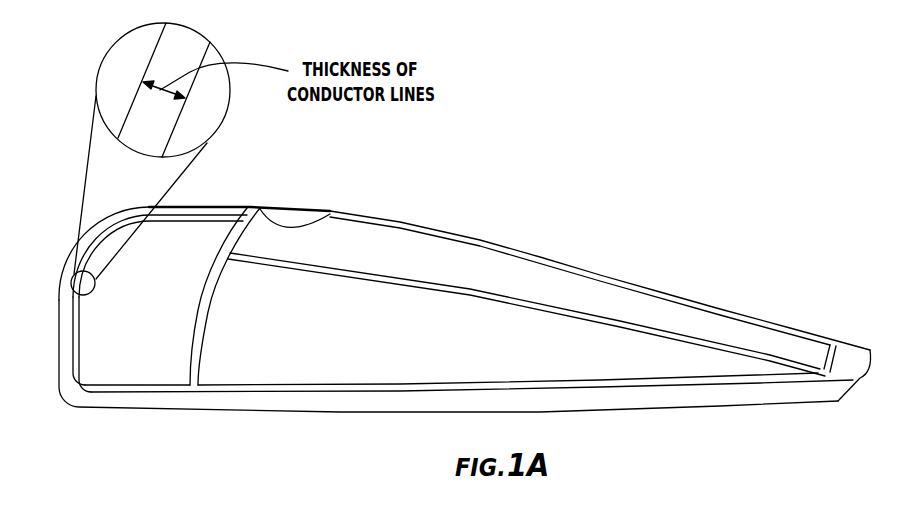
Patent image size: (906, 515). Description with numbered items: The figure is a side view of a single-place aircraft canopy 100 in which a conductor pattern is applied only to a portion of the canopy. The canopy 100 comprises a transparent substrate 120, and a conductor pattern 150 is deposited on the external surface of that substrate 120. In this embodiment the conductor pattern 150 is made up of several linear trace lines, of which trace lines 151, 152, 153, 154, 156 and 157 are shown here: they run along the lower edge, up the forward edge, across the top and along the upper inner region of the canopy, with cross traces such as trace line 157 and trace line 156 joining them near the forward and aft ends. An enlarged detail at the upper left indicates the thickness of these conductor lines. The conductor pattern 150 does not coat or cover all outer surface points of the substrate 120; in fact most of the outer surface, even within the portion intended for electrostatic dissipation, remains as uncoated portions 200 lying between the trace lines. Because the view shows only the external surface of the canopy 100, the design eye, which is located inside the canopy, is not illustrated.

The single-place canopy 100 is at (533, 193).
The transparent substrate 120 is at (353, 240).
The conductor pattern 150 is at (328, 212).
The linear trace line 151 is at (240, 390).
The linear trace line 152 is at (73, 327).
The linear trace line 153 is at (212, 222).
The linear trace line 154 is at (683, 297).
The linear trace line 156 is at (833, 345).
The linear trace line 157 is at (203, 298).
The uncoated portions 200 is at (615, 290).